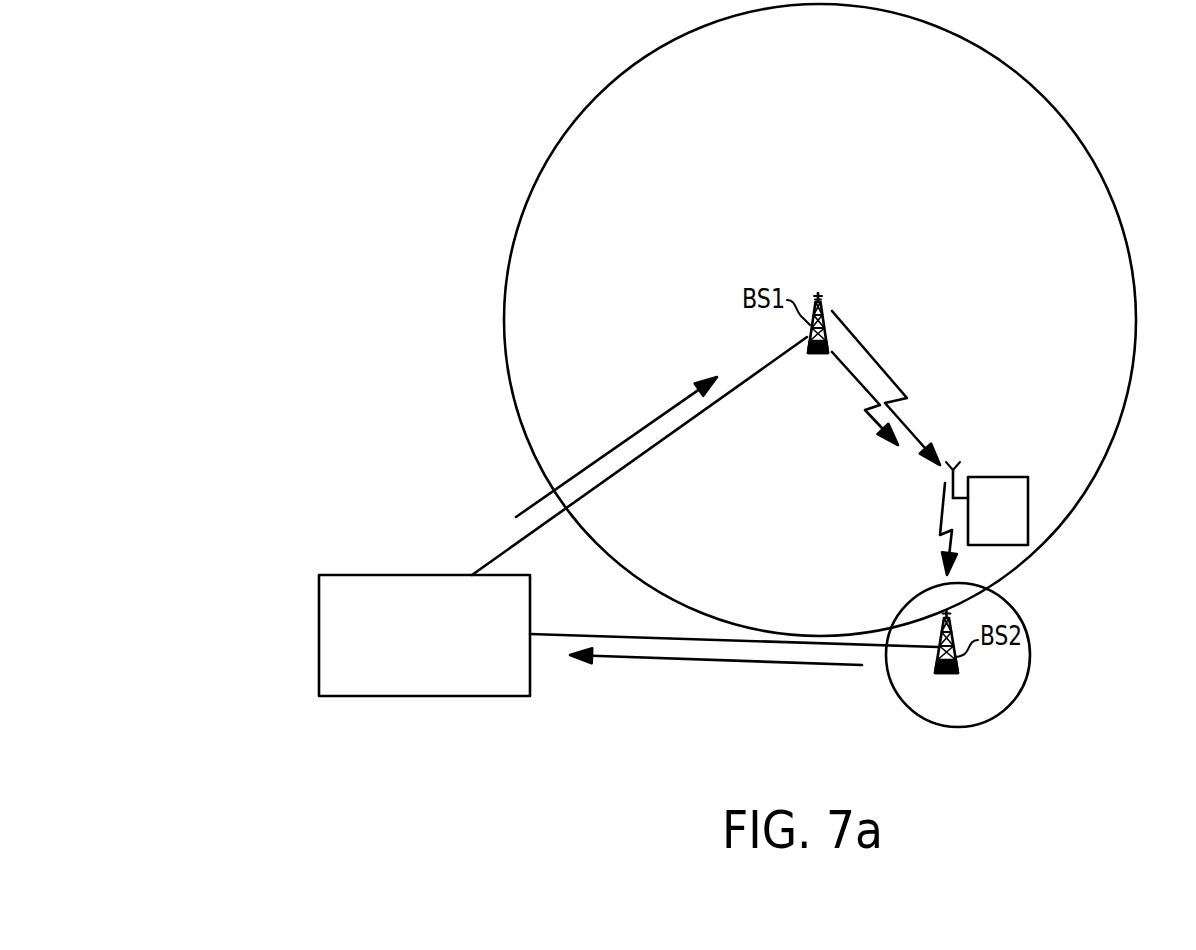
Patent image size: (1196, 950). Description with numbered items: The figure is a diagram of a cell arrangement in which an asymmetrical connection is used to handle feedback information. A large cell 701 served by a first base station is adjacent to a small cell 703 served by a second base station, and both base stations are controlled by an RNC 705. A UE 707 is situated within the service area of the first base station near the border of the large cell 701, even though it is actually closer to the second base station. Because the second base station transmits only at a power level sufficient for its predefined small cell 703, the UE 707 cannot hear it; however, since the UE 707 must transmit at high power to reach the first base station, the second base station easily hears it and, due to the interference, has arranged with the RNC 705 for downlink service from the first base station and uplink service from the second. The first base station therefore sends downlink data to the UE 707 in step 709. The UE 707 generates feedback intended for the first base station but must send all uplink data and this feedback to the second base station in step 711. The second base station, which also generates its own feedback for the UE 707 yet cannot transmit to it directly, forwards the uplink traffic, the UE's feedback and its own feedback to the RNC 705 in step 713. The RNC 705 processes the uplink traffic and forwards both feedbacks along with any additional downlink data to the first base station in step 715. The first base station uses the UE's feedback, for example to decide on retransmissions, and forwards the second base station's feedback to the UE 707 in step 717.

The large cell 701 is at (1118, 425).
The small cell 703 is at (1017, 610).
The RNC 705 is at (347, 575).
The UE 707 is at (1017, 477).
The downlink data transmission step 709 is at (909, 392).
The uplink data and UE feedback transmission step 711 is at (942, 505).
The forwarding step to RNC 713 is at (695, 660).
The forwarding step to first base station 715 is at (537, 503).
The second base station feedback forwarding step 717 is at (857, 383).